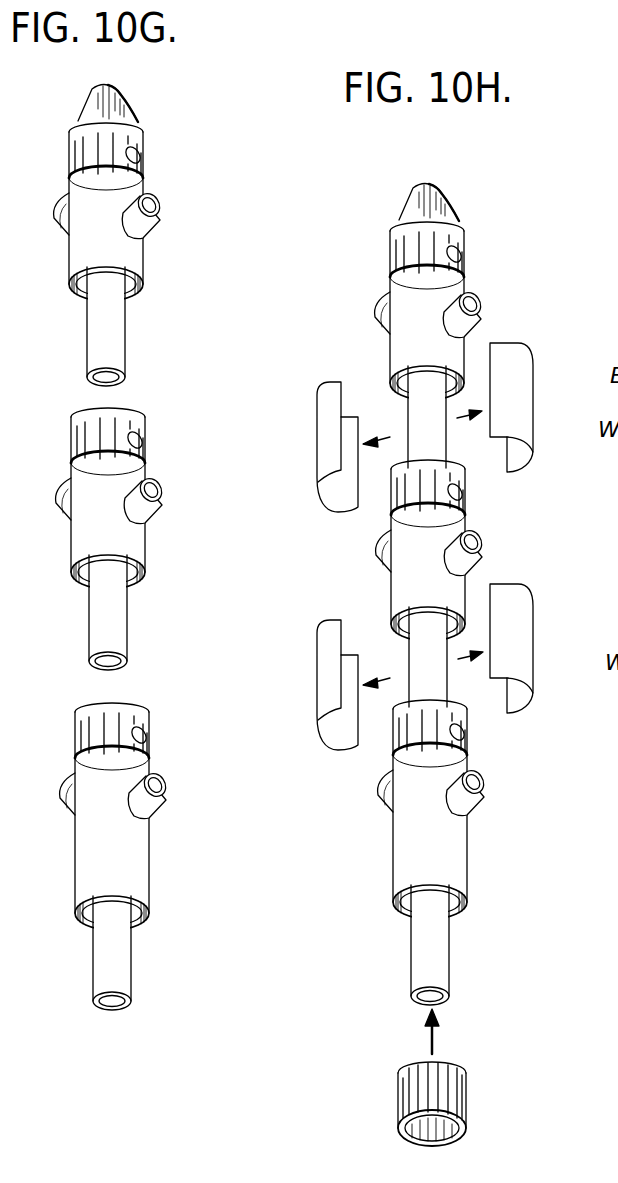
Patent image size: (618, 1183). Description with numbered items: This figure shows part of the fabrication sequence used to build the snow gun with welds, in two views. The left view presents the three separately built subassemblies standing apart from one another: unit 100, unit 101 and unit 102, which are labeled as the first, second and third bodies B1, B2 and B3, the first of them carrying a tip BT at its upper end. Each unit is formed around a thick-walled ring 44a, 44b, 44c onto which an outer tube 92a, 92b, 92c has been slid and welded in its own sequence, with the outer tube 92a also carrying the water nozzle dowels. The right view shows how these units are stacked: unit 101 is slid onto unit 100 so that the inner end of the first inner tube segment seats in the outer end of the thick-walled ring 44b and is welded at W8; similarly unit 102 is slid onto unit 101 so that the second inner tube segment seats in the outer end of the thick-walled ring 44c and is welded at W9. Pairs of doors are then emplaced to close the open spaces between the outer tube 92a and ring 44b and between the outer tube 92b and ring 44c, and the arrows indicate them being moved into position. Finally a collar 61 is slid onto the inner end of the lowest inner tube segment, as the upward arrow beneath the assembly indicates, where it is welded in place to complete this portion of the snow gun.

In FIG. 10G, the bullet tip BT is at (118, 100).
In FIG. 10H, the bullet tip BT is at (440, 198).
In FIG. 10G, the first body unit B1 is at (75, 249).
In FIG. 10G, the second body unit B2 is at (72, 532).
In FIG. 10G, the third body unit B3 is at (80, 835).
In FIG. 10G, the unit 100 is at (196, 291).
In FIG. 10G, the unit 101 is at (173, 577).
In FIG. 10G, the unit 102 is at (172, 879).
In FIG. 10H, the thick-walled ring 44a is at (388, 252).
In FIG. 10H, the thick-walled ring 44b is at (470, 503).
In FIG. 10H, the thick-walled ring 44c is at (471, 742).
In FIG. 10H, the outer tube 92a is at (392, 345).
In FIG. 10H, the outer tube 92b is at (396, 592).
In FIG. 10H, the outer tube 92c is at (400, 826).
In FIG. 10H, the weld W8 is at (458, 461).
In FIG. 10H, the weld W9 is at (460, 700).
In FIG. 10H, the collar 61 is at (462, 1103).